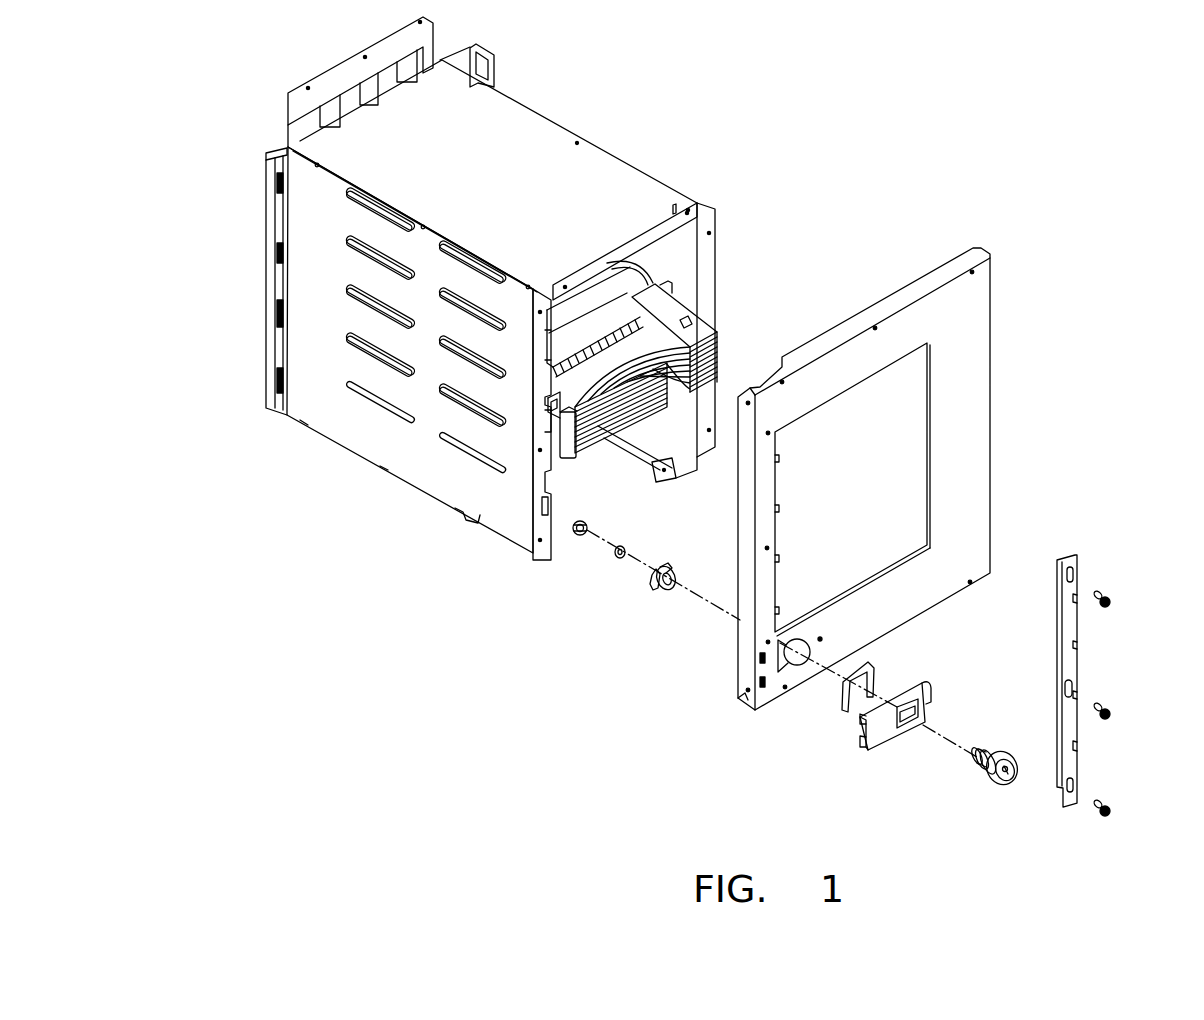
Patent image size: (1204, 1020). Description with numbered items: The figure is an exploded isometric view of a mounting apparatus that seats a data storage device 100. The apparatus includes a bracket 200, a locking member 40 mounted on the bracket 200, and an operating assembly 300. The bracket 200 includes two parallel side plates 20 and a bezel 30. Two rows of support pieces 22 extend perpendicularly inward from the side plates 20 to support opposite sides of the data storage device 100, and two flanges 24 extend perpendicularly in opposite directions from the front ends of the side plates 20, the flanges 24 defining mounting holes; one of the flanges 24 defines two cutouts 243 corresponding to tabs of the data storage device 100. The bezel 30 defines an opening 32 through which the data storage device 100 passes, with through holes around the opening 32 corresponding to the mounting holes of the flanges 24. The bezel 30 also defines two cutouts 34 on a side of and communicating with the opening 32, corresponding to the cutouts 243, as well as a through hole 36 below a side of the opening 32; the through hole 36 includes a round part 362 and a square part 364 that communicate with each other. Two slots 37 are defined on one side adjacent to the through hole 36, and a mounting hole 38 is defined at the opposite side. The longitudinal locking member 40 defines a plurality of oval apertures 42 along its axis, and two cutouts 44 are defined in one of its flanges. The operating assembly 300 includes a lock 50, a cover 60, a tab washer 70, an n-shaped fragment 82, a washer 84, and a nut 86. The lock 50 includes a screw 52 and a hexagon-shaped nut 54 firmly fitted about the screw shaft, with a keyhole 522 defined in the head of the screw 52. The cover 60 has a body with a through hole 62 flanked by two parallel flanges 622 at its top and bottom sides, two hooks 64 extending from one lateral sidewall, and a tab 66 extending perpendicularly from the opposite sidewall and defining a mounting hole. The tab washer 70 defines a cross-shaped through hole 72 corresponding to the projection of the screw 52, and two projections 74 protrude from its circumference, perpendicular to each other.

The side plates 20 is at (687, 257).
The support pieces 22 is at (366, 398).
The flanges 24 is at (537, 512).
The cutouts 243 is at (551, 412).
The bezel 30 is at (957, 265).
The opening 32 is at (883, 423).
The cutouts 34 is at (775, 557).
The through hole 36 is at (738, 745).
The round part 362 is at (806, 664).
The square part 364 is at (772, 664).
The slots 37 is at (762, 680).
The mounting hole 38 is at (820, 636).
The locking member 40 is at (1086, 762).
The oval apertures 42 is at (1073, 573).
The cutouts 44 is at (1075, 695).
The lock 50 is at (990, 790).
The screw 52 is at (1000, 790).
The keyhole 522 is at (1012, 775).
The hexagon-shaped nut 54 is at (983, 777).
The cover 60 is at (877, 752).
The through hole 62 is at (922, 715).
The flanges 622 is at (908, 733).
The hooks 64 is at (863, 748).
The tab 66 is at (928, 686).
The tab washer 70 is at (667, 596).
The cross-shaped through hole 72 is at (672, 570).
The projections 74 is at (653, 578).
The n-shaped fragment 82 is at (873, 667).
The washer 84 is at (623, 567).
The nut 86 is at (585, 540).
The data storage device 100 is at (677, 317).
The bracket 200 is at (790, 141).
The operating assembly 300 is at (546, 644).